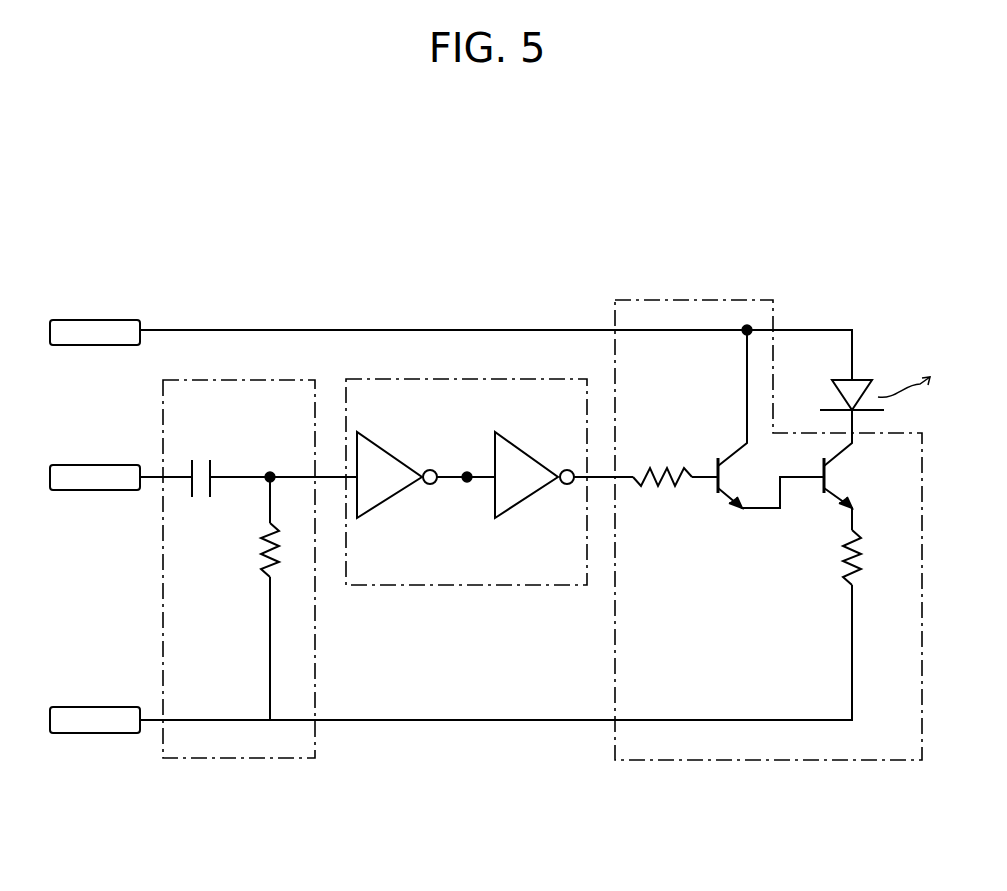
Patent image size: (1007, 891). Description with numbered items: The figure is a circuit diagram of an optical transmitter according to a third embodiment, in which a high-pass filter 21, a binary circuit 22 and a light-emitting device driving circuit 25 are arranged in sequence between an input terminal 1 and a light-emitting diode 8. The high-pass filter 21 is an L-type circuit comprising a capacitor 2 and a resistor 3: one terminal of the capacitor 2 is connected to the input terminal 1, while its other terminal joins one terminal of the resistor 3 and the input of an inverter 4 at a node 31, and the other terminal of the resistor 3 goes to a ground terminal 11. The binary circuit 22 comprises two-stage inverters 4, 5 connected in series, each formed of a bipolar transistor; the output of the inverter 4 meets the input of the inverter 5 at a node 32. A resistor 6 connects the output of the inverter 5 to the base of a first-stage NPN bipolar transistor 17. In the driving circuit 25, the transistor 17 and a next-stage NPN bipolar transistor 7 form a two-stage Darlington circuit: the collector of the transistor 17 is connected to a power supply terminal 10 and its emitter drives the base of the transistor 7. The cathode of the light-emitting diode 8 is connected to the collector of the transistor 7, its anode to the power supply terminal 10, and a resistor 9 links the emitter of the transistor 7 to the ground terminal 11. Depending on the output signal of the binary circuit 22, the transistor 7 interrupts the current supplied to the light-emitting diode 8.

The input terminal 1 is at (95, 460).
The capacitor 2 is at (201, 464).
The resistor 3 is at (254, 550).
The inverter 4 is at (397, 468).
The inverter 5 is at (534, 468).
The resistor 6 is at (662, 459).
The NPN bipolar transistor 7 is at (855, 470).
The light-emitting diode 8 is at (863, 393).
The resistor 9 is at (864, 557).
The power supply terminal 10 is at (95, 315).
The ground terminal 11 is at (95, 703).
The NPN bipolar transistor 17 is at (761, 416).
The high-pass filter 21 is at (232, 377).
The binary circuit 22 is at (438, 378).
The light-emitting device driving circuit 25 is at (688, 300).
The node 31 is at (268, 458).
The node 32 is at (467, 495).